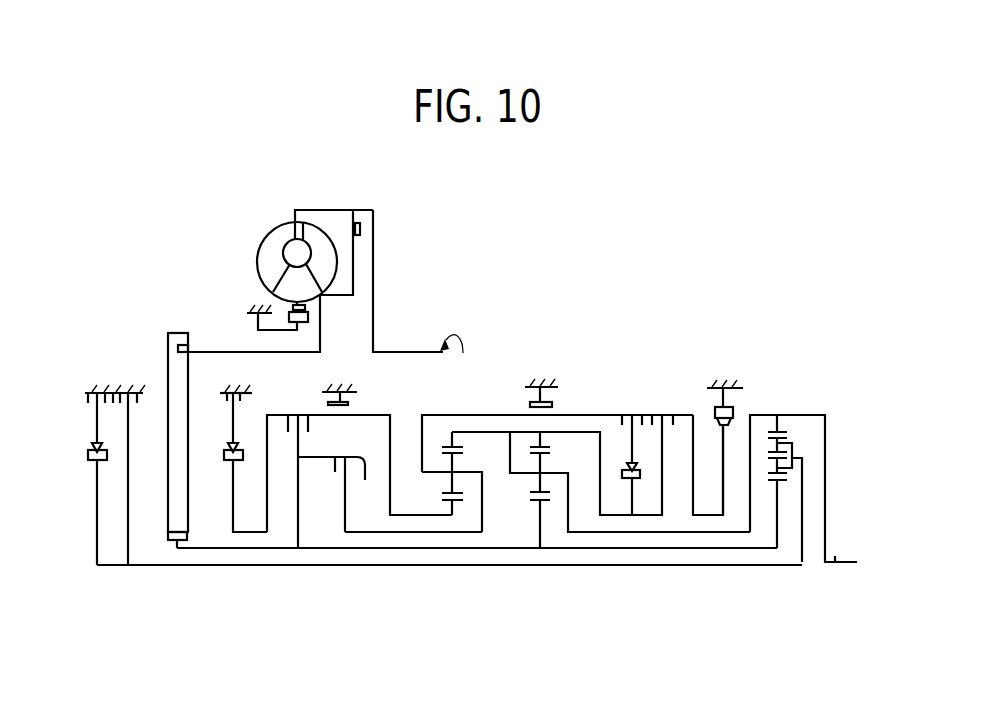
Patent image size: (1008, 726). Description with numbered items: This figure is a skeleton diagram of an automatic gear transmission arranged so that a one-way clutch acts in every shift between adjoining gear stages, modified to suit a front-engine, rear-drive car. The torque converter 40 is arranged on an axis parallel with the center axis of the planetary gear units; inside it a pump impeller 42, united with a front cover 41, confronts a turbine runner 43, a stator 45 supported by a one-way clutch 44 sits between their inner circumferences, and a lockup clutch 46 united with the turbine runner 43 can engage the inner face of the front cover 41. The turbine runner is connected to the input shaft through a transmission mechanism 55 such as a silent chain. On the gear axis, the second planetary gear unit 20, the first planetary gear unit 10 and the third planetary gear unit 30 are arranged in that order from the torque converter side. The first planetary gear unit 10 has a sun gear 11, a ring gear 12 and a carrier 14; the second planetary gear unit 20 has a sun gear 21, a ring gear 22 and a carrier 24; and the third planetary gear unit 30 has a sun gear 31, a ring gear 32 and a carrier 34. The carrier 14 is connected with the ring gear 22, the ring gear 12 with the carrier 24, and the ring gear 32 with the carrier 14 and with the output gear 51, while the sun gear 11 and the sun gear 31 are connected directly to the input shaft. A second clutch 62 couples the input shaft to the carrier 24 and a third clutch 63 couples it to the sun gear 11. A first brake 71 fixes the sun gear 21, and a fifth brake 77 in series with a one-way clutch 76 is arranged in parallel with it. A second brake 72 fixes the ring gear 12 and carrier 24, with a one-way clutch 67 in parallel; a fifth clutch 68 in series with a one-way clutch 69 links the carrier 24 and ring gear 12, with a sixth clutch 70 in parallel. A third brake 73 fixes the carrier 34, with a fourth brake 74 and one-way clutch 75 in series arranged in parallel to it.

The first planetary gear unit 10 is at (558, 567).
The sun gear 11 is at (535, 497).
The ring gear 12 is at (543, 445).
The carrier 14 is at (545, 478).
The second planetary gear unit 20 is at (463, 534).
The sun gear 21 is at (442, 497).
The ring gear 22 is at (446, 445).
The carrier 24 is at (463, 465).
The third planetary gear unit 30 is at (785, 566).
The sun gear 31 is at (781, 482).
The ring gear 32 is at (778, 430).
The carrier 34 is at (795, 452).
The torque converter 40 is at (251, 226).
The front cover 41 is at (376, 282).
The pump impeller 42 is at (280, 228).
The turbine runner 43 is at (313, 238).
The one-way clutch 44 is at (308, 317).
The stator 45 is at (293, 288).
The lockup clutch 46 is at (360, 228).
The output gear 51 is at (849, 544).
The transmission mechanism 55 is at (170, 338).
The second clutch 62 is at (341, 494).
The third clutch 63 is at (292, 414).
The one-way clutch 67 is at (719, 387).
The fifth clutch 68 is at (631, 413).
The one-way clutch 69 is at (641, 477).
The sixth clutch 70 is at (672, 413).
The first brake 71 is at (357, 398).
The second brake 72 is at (538, 385).
The third brake 73 is at (126, 390).
The fourth brake 74 is at (93, 387).
The one-way clutch 75 is at (88, 456).
The one-way clutch 76 is at (226, 462).
The fifth brake 77 is at (232, 396).